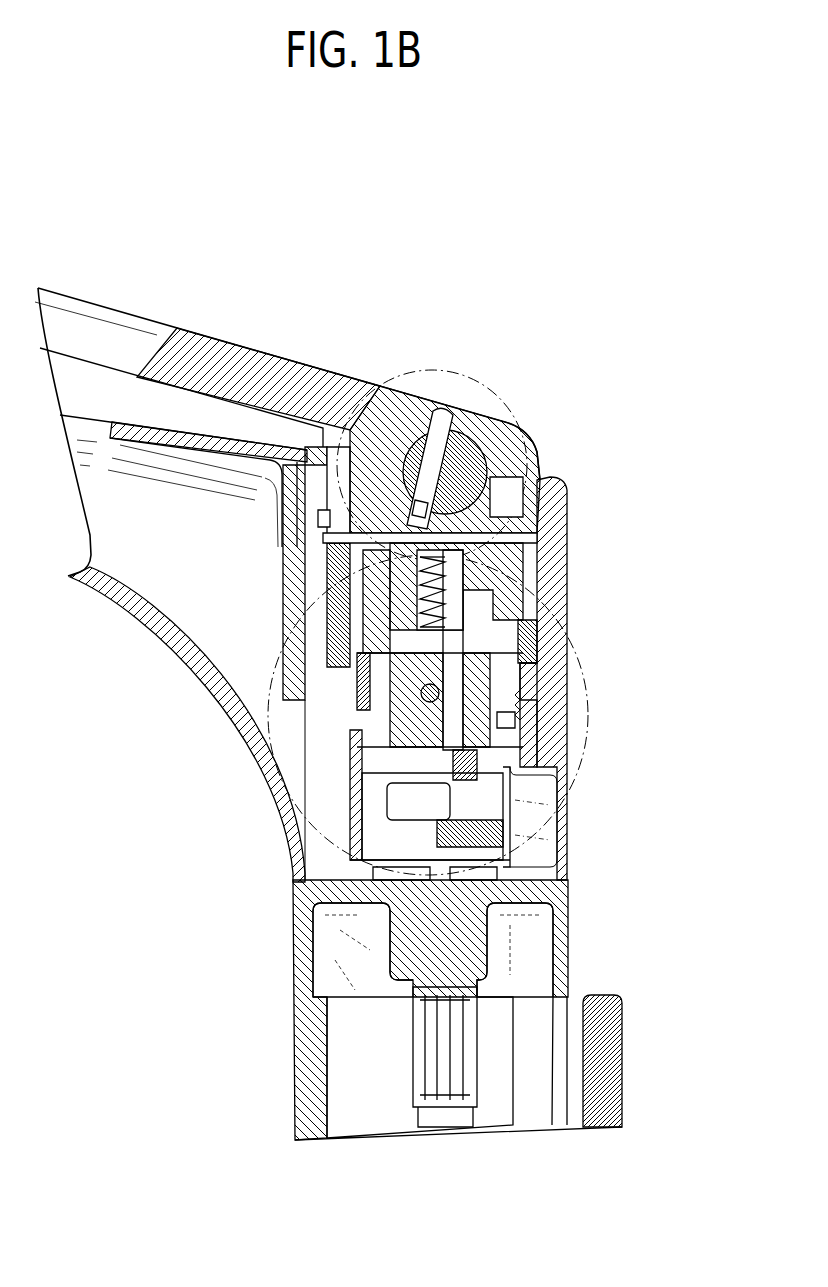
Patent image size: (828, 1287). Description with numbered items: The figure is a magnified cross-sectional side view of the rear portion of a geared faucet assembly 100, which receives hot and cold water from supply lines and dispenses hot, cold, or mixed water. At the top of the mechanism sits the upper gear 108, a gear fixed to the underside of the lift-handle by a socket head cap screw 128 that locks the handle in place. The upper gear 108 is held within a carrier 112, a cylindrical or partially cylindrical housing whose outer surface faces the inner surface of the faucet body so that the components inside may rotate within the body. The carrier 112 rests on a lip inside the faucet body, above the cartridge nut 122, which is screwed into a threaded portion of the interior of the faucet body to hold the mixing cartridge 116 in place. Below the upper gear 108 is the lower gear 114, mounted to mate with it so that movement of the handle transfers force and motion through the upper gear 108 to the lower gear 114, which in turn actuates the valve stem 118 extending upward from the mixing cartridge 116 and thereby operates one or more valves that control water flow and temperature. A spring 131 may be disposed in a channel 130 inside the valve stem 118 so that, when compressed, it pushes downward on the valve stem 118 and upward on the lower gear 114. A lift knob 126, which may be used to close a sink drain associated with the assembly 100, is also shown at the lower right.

The faucet assembly 100 is at (328, 176).
The upper gear 108 is at (492, 470).
The carrier 112 is at (542, 657).
The lower gear 114 is at (486, 578).
The mixing cartridge 116 is at (509, 721).
The valve stem 118 is at (410, 583).
The cartridge nut 122 is at (534, 706).
The lift knob 126 is at (626, 1055).
The socket head cap screw 128 is at (447, 402).
The channel 130 is at (410, 605).
The spring 131 is at (410, 627).